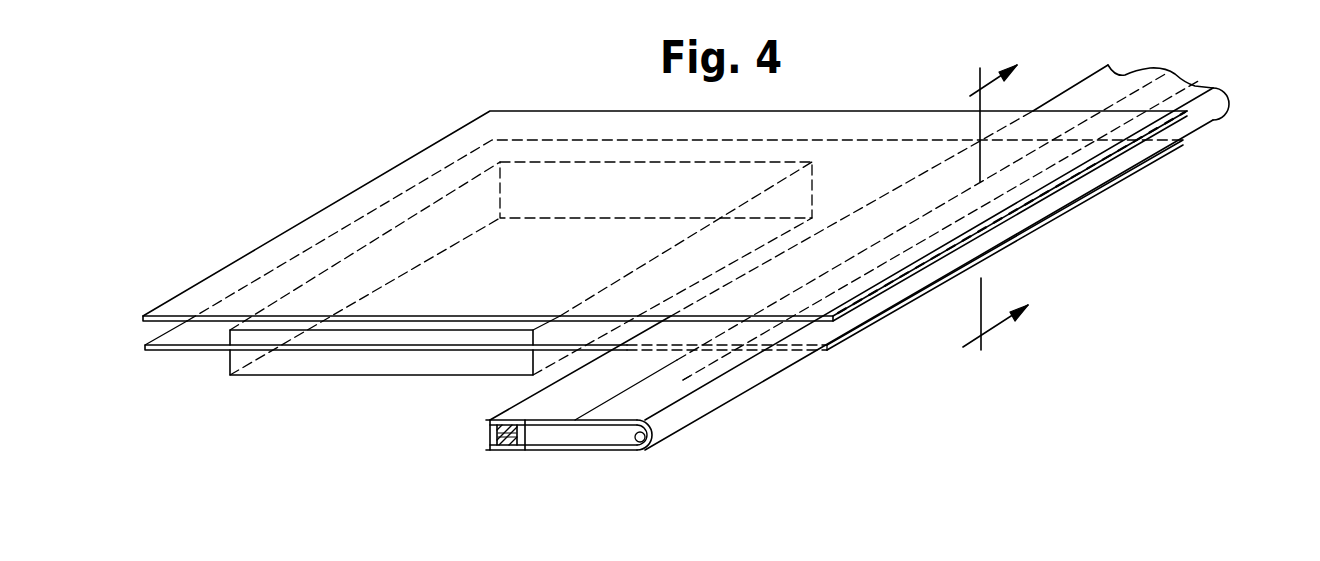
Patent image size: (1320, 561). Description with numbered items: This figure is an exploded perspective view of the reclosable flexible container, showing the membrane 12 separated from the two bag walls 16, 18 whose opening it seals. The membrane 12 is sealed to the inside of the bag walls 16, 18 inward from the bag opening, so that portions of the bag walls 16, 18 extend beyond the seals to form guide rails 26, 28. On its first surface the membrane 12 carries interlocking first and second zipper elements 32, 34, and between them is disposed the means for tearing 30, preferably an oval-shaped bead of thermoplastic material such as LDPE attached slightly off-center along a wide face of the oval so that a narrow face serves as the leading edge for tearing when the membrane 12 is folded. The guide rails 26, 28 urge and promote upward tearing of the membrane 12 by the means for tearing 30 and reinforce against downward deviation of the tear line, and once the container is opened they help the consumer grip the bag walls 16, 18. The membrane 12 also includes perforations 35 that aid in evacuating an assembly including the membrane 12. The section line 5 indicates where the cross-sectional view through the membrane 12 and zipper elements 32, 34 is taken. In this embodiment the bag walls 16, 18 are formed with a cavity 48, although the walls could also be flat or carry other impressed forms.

The section line 5- 5 is at (1017, 190).
The membrane 12 is at (580, 438).
The bag wall 16 is at (188, 312).
The bag wall 18 is at (178, 354).
The guide rail 26 is at (1120, 150).
The guide rail 28 is at (1110, 187).
The means for tearing 30 is at (652, 450).
The first zipper element 32 is at (498, 452).
The second zipper element 34 is at (490, 437).
The perforations 35 is at (680, 359).
The cavity 48 is at (282, 367).